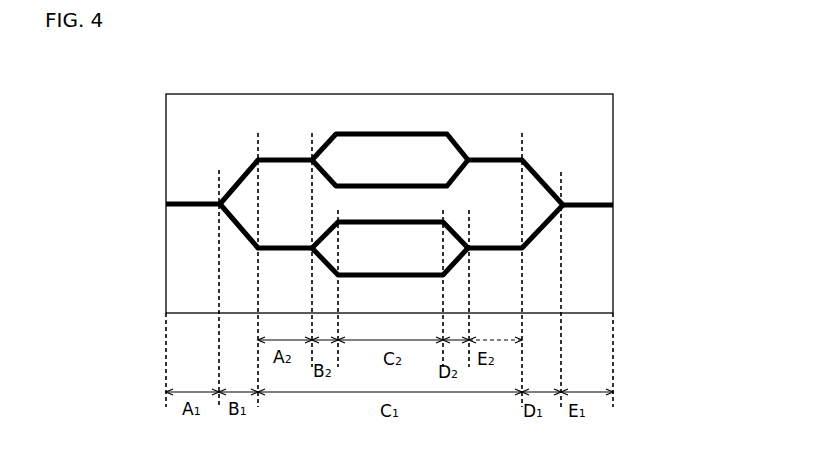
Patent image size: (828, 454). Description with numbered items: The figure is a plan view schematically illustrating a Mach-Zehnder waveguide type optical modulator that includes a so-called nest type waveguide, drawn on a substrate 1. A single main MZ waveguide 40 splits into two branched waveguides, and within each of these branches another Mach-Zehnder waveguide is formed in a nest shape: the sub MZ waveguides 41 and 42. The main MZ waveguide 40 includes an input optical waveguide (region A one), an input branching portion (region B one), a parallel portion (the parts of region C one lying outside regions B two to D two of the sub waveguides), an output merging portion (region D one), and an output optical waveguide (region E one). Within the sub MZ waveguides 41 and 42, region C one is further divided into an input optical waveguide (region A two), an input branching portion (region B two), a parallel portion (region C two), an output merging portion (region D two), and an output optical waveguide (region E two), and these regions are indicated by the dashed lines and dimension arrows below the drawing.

The optical waveguide substrate 1 is at (580, 147).
The main MZ waveguide 40 is at (271, 148).
The sub MZ waveguide 41 is at (419, 121).
The sub MZ waveguide 42 is at (389, 210).